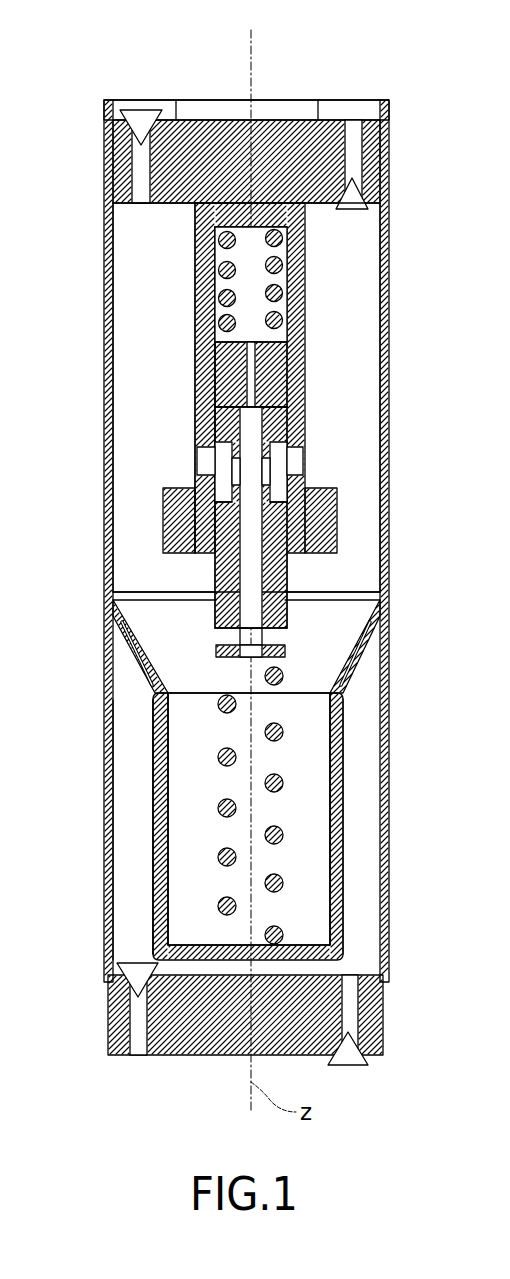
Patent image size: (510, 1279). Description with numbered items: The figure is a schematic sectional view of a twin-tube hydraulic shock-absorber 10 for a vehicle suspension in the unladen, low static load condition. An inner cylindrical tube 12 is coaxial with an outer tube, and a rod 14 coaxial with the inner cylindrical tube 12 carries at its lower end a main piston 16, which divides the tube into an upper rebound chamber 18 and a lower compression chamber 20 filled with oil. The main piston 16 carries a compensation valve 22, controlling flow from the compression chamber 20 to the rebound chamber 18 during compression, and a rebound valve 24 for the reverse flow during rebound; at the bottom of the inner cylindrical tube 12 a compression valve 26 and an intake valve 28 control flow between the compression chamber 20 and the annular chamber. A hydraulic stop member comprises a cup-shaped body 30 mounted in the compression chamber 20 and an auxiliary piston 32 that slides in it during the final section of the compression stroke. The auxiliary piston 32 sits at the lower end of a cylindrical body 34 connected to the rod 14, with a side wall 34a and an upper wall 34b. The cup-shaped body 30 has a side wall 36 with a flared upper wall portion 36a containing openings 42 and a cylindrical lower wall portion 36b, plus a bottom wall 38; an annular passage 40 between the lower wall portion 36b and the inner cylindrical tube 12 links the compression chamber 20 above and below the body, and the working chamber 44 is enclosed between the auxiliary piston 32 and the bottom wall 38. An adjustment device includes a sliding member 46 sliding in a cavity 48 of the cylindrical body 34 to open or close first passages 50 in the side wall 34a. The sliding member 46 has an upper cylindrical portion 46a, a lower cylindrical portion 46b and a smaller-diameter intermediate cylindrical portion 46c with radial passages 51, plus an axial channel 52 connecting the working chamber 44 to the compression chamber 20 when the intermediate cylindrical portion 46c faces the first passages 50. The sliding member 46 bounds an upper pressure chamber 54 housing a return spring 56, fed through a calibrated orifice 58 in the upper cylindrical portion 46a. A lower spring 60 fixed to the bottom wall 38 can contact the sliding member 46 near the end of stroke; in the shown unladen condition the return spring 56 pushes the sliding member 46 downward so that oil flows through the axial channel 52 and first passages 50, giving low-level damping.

The twin-tube hydraulic shock-absorber 10 is at (78, 92).
The inner cylindrical tube 12 is at (106, 538).
The rod 14 is at (323, 108).
The main piston 16 is at (370, 168).
The upper chamber 18 is at (365, 112).
The lower chamber 20 is at (360, 358).
The compensation valve 22 is at (152, 100).
The rebound valve 24 is at (352, 212).
The compression valve 26 is at (348, 1068).
The intake valve 28 is at (120, 958).
The cup-shaped body 30 is at (352, 836).
The auxiliary piston 32 is at (338, 520).
The cylindrical body 34 is at (190, 305).
The side wall 34a is at (200, 272).
The upper wall 34b is at (262, 222).
The side wall 36 is at (155, 838).
The upper wall portion 36a is at (372, 652).
The lower wall portion 36b is at (340, 793).
The bottom wall 38 is at (180, 962).
The annular passage 40 is at (135, 900).
The openings 42 is at (140, 670).
The working chamber 44 is at (305, 857).
The sliding member 46 is at (276, 403).
The upper cylindrical portion 46a is at (270, 383).
The lower cylindrical portion 46b is at (287, 585).
The intermediate cylindrical portion 46c is at (283, 488).
The cavity 48 is at (235, 380).
The first passages 50 is at (200, 468).
The radial passages 51 is at (270, 466).
The axial channel 52 is at (243, 603).
The upper pressure chamber 54 is at (270, 320).
The return spring 56 is at (293, 262).
The calibrated orifice 58 is at (247, 402).
The lower spring 60 is at (285, 883).